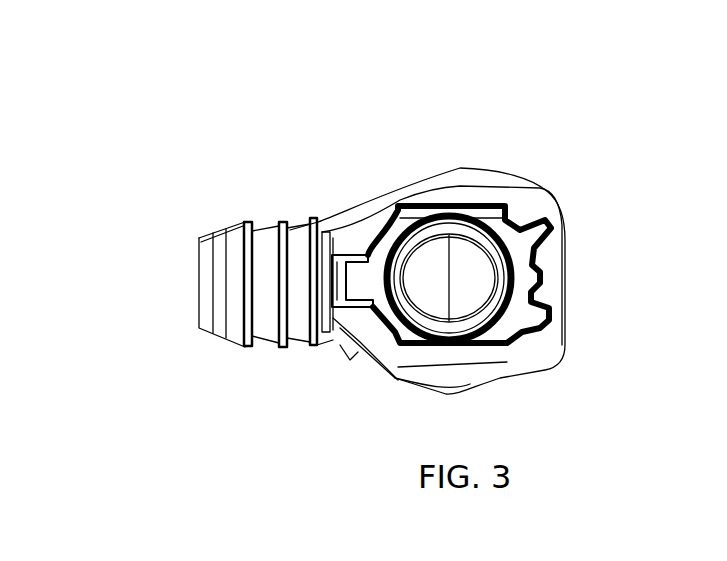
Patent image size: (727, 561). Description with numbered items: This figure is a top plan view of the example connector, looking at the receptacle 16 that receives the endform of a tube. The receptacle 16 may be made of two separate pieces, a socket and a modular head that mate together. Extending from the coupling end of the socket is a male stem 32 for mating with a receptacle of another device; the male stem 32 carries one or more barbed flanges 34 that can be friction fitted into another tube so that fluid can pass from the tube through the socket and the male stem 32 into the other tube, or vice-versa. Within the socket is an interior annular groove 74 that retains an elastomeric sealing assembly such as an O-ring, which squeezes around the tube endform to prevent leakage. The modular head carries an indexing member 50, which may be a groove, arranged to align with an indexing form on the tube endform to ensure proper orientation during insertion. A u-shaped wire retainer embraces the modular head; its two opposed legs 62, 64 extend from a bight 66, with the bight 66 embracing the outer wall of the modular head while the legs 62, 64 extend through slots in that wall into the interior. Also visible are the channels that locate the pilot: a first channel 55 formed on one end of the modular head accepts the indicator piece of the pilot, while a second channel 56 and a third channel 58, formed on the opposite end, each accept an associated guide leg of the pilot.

The receptacle 16 is at (571, 133).
The male stem 32 is at (218, 330).
The barbed flanges 34 is at (278, 225).
The indexing member 50 is at (541, 284).
The first channel 55 is at (357, 280).
The second channel 56 is at (548, 232).
The third channel 58 is at (548, 318).
The leg 62 is at (478, 350).
The leg 64 is at (452, 212).
The bight 66 is at (358, 355).
The interior annular groove 74 is at (418, 310).